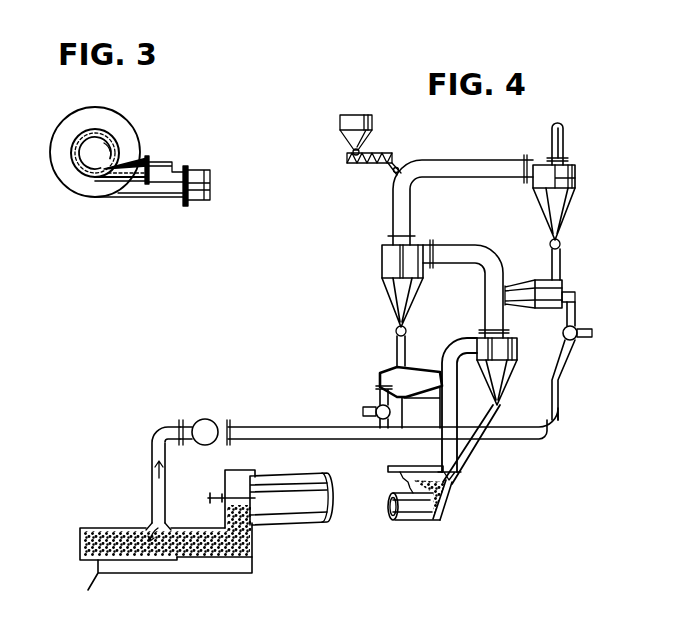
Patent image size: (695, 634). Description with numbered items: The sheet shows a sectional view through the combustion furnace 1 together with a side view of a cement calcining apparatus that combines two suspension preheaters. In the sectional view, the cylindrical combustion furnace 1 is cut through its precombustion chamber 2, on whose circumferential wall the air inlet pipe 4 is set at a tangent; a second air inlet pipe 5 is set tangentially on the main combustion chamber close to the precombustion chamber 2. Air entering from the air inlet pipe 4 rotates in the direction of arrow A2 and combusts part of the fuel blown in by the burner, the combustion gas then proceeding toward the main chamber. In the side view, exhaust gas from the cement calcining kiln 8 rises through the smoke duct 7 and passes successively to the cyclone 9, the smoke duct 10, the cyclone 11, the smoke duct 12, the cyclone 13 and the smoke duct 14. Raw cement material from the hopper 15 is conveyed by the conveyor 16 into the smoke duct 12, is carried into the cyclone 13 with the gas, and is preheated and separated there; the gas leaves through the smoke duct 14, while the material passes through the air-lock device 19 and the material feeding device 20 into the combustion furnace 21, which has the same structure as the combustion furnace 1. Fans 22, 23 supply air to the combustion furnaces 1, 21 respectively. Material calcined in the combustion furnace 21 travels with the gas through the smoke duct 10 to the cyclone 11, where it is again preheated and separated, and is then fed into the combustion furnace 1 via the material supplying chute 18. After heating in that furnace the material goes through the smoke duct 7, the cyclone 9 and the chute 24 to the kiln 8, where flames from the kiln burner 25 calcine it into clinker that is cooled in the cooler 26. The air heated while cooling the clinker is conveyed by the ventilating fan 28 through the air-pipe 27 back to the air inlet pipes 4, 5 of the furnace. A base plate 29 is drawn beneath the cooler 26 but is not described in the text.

In FIG. 3, the combustion furnace 1 is at (62, 146).
In FIG. 4, the combustion furnace 1 is at (417, 366).
In FIG. 3, the arrow indicating air rotation direction A2 is at (84, 134).
In FIG. 3, the precombustion chamber 2 is at (115, 140).
In FIG. 3, the air inlet pipe 4 is at (166, 166).
In FIG. 4, the air inlet pipe 4 is at (576, 313).
In FIG. 3, the air inlet pipe 5 is at (200, 192).
In FIG. 4, the air inlet pipe 5 is at (403, 414).
In FIG. 4, the smoke duct 7 is at (458, 346).
In FIG. 4, the cement calcining kiln 8 is at (402, 522).
In FIG. 4, the cyclone 9 is at (506, 373).
In FIG. 4, the smoke duct 10 is at (460, 256).
In FIG. 4, the cyclone 11 is at (382, 257).
In FIG. 4, the smoke duct 12 is at (467, 170).
In FIG. 4, the cyclone 13 is at (565, 181).
In FIG. 4, the smoke duct 14 is at (558, 144).
In FIG. 4, the hopper 15 is at (366, 128).
In FIG. 4, the conveyor 16 is at (368, 164).
In FIG. 4, the material supplying chute 18 is at (397, 352).
In FIG. 4, the air-lock device 19 is at (562, 242).
In FIG. 4, the material feeding device 20 is at (562, 268).
In FIG. 4, the combustion furnace 21 is at (558, 292).
In FIG. 4, the fan 22 is at (372, 409).
In FIG. 4, the fan 23 is at (575, 340).
In FIG. 4, the chute 24 is at (470, 466).
In FIG. 4, the kiln burner 25 is at (212, 494).
In FIG. 4, the cooler 26 is at (105, 538).
In FIG. 4, the air-pipe 27 is at (155, 460).
In FIG. 4, the ventilating fan 28 is at (210, 418).
In FIG. 4, the base plate 29 is at (166, 562).